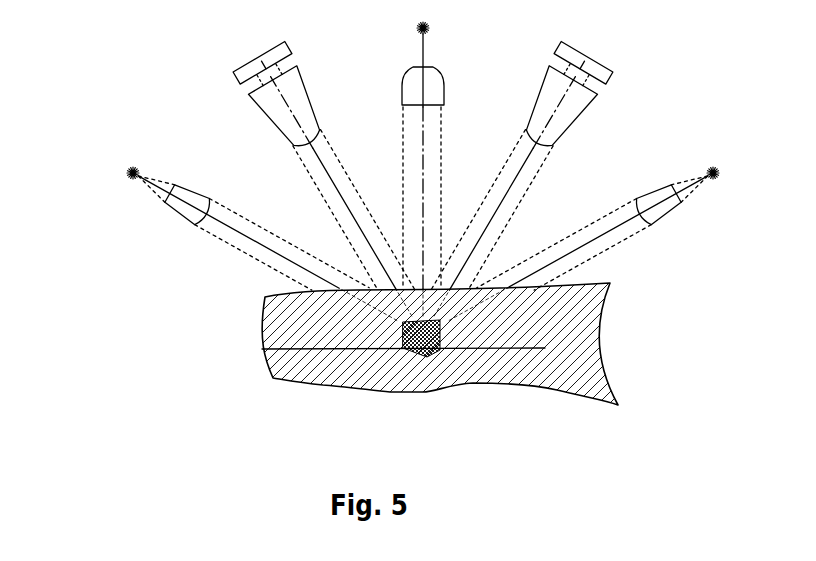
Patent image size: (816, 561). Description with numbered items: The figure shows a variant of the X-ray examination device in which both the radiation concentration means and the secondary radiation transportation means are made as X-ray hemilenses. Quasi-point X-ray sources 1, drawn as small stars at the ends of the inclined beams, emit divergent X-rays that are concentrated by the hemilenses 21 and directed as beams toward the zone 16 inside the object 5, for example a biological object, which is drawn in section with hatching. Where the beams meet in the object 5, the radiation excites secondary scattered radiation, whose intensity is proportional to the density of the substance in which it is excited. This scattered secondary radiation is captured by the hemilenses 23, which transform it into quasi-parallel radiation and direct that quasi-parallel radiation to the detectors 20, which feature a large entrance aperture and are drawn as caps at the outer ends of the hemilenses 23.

The X-ray source 1 is at (129, 178).
The object 5 is at (262, 310).
The zone 16 is at (262, 349).
The detector 20 is at (240, 71).
The hemilens 21 is at (183, 210).
The hemilens 23 is at (277, 110).